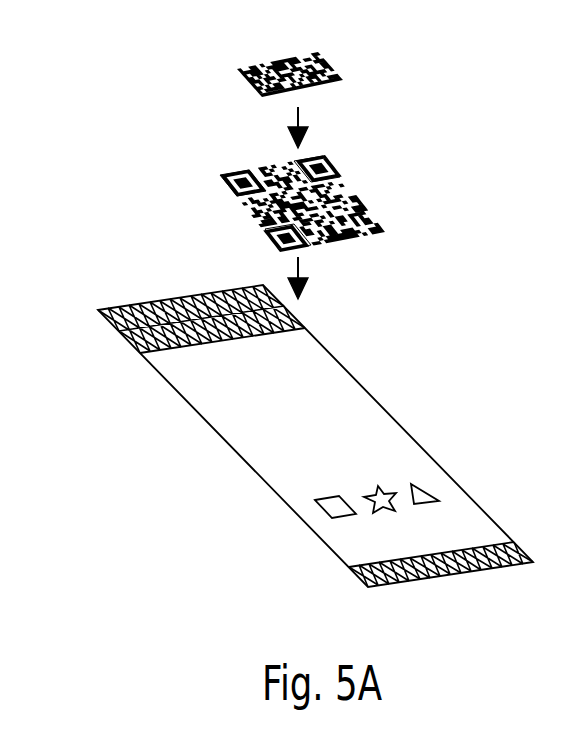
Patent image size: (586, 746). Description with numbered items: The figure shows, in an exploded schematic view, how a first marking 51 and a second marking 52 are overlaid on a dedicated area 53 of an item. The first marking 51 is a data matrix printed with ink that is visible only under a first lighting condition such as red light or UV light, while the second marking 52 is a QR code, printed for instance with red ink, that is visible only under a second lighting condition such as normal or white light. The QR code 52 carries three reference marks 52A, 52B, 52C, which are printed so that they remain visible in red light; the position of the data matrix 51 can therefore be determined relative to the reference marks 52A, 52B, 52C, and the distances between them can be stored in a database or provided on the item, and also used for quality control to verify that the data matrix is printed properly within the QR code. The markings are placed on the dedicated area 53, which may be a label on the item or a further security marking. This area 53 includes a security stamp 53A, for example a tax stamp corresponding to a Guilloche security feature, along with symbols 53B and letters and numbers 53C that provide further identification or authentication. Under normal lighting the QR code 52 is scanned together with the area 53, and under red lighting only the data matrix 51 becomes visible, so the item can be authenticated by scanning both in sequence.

The first marking 51 is at (328, 62).
The second marking 52 is at (366, 212).
The reference mark 52A is at (320, 158).
The reference mark 52B is at (275, 250).
The reference mark 52C is at (218, 173).
The dedicated area 53 is at (367, 389).
The security stamp 53A is at (128, 342).
The symbols 53B is at (437, 490).
The letters and numbers 53C is at (462, 527).